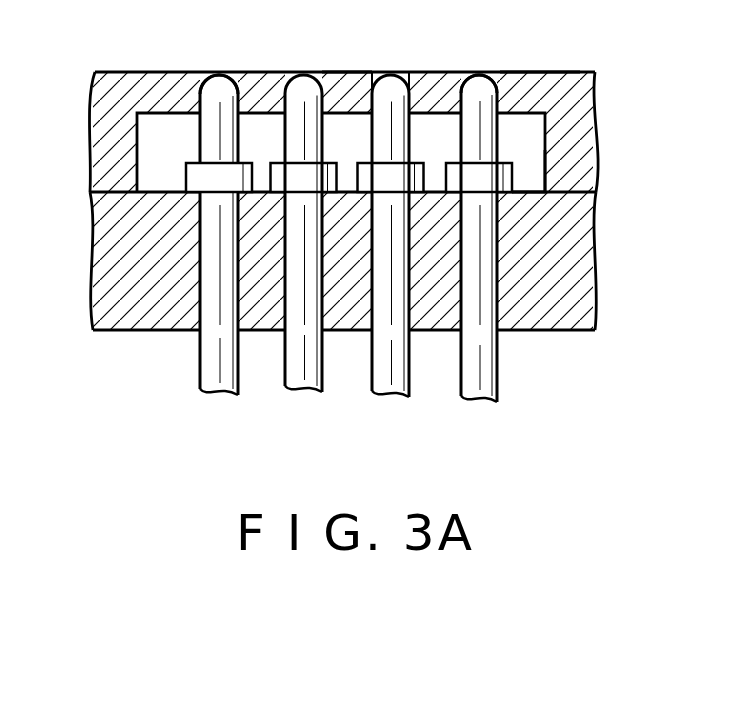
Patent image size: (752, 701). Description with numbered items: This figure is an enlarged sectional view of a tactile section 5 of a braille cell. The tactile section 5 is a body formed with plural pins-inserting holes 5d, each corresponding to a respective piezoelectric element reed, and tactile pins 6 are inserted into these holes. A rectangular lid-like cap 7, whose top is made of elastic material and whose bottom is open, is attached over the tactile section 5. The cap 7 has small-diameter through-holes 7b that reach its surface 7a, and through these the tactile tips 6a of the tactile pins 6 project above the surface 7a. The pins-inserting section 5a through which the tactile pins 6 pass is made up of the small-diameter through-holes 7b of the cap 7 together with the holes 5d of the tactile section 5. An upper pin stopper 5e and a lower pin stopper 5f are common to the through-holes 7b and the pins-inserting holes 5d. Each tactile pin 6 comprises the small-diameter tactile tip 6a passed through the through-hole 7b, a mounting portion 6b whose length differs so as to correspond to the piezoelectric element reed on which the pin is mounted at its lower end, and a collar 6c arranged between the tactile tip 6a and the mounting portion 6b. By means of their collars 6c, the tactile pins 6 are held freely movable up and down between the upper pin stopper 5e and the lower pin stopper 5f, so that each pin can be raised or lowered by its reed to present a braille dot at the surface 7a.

The tactile section 5 is at (580, 260).
The pins-inserting section 5a is at (528, 132).
The pins-inserting holes 5d is at (500, 293).
The upper pin stopper 5e is at (334, 73).
The lower pin stopper 5f is at (522, 193).
The tactile pin 6 is at (497, 353).
The tactile tip 6a is at (220, 80).
The mounting portion 6b is at (210, 373).
The collar 6c is at (187, 178).
The cap 7 is at (588, 72).
The surface of the cap 7a is at (540, 72).
The through-holes 7b is at (432, 72).